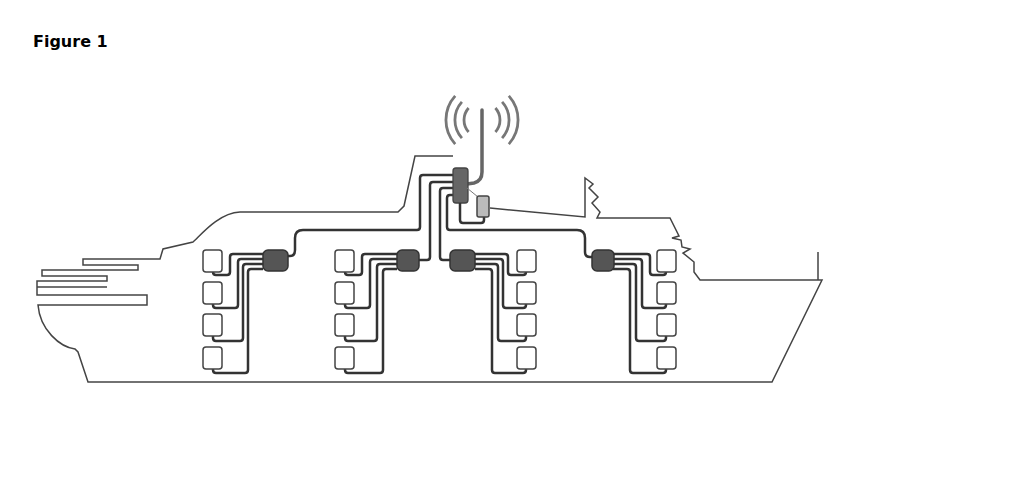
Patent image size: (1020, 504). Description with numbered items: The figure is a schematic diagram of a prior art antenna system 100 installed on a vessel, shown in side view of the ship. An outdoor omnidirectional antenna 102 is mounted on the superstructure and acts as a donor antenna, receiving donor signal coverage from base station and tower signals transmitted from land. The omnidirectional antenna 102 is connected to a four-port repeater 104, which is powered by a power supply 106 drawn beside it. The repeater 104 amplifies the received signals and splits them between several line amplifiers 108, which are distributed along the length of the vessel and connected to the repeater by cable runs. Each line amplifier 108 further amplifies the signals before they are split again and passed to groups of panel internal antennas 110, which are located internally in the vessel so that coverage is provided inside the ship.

The vessel monitoring system 100 is at (212, 142).
The outdoor omnidirectional antenna 102 is at (484, 106).
The four-port repeater 104 is at (455, 166).
The power supply 106 is at (487, 196).
The line amplifier 108 is at (278, 275).
The panel internal antenna 110 is at (204, 362).